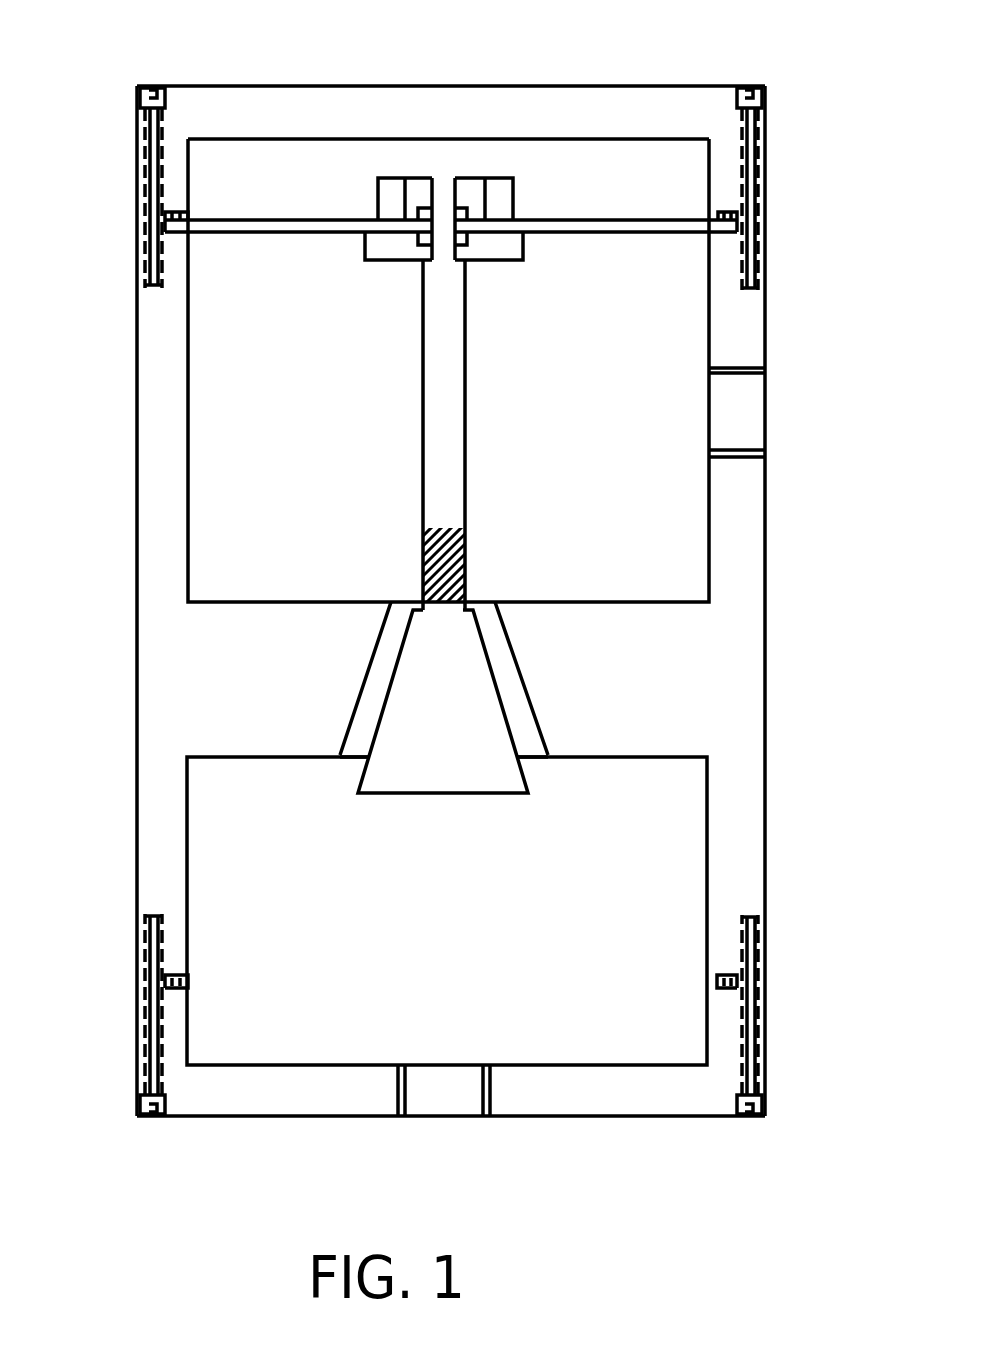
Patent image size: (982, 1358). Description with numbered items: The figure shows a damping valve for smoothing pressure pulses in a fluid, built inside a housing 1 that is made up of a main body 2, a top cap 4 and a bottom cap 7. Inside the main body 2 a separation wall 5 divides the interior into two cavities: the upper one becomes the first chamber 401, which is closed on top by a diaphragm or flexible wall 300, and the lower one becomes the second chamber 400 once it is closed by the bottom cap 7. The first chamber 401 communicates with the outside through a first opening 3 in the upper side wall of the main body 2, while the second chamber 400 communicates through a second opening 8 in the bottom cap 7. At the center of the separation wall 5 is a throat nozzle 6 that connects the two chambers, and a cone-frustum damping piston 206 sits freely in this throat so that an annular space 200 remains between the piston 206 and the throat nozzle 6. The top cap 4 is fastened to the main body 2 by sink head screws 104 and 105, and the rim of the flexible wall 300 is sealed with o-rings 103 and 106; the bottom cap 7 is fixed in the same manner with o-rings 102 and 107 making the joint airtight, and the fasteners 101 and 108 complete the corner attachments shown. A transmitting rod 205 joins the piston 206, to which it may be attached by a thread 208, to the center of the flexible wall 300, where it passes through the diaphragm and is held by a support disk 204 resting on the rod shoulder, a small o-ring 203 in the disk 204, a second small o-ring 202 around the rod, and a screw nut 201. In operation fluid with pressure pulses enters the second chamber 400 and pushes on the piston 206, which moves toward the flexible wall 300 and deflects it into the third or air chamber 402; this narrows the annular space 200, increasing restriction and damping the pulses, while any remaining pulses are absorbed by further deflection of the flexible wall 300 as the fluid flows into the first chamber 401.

The housing 1 is at (767, 830).
The main body 2 is at (735, 690).
The first opening 3 is at (743, 392).
The top cap 4 is at (578, 97).
The separation wall 5 is at (290, 671).
The throat nozzle 6 is at (345, 755).
The bottom cap 7 is at (320, 1100).
The second opening 8 is at (446, 1100).
The lower right fastener 101 is at (755, 1105).
The o-ring 102 is at (728, 982).
The o-ring 103 is at (725, 217).
The sink head screw 104 is at (750, 102).
The sink head screw 105 is at (162, 92).
The o-ring 106 is at (168, 213).
The o-ring 107 is at (168, 976).
The lower left fastener 108 is at (137, 1103).
The annular space 200 is at (520, 718).
The screw nut 201 is at (473, 192).
The small o-ring 202 is at (422, 208).
The small o-ring 203 is at (422, 240).
The support disk 204 is at (397, 252).
The transmitting rod 205 is at (440, 497).
The damping piston 206 is at (388, 775).
The thread 208 is at (442, 532).
The flexible wall 300 is at (622, 228).
The second chamber 400 is at (572, 870).
The first chamber 401 is at (640, 500).
The third chamber 402 is at (647, 177).